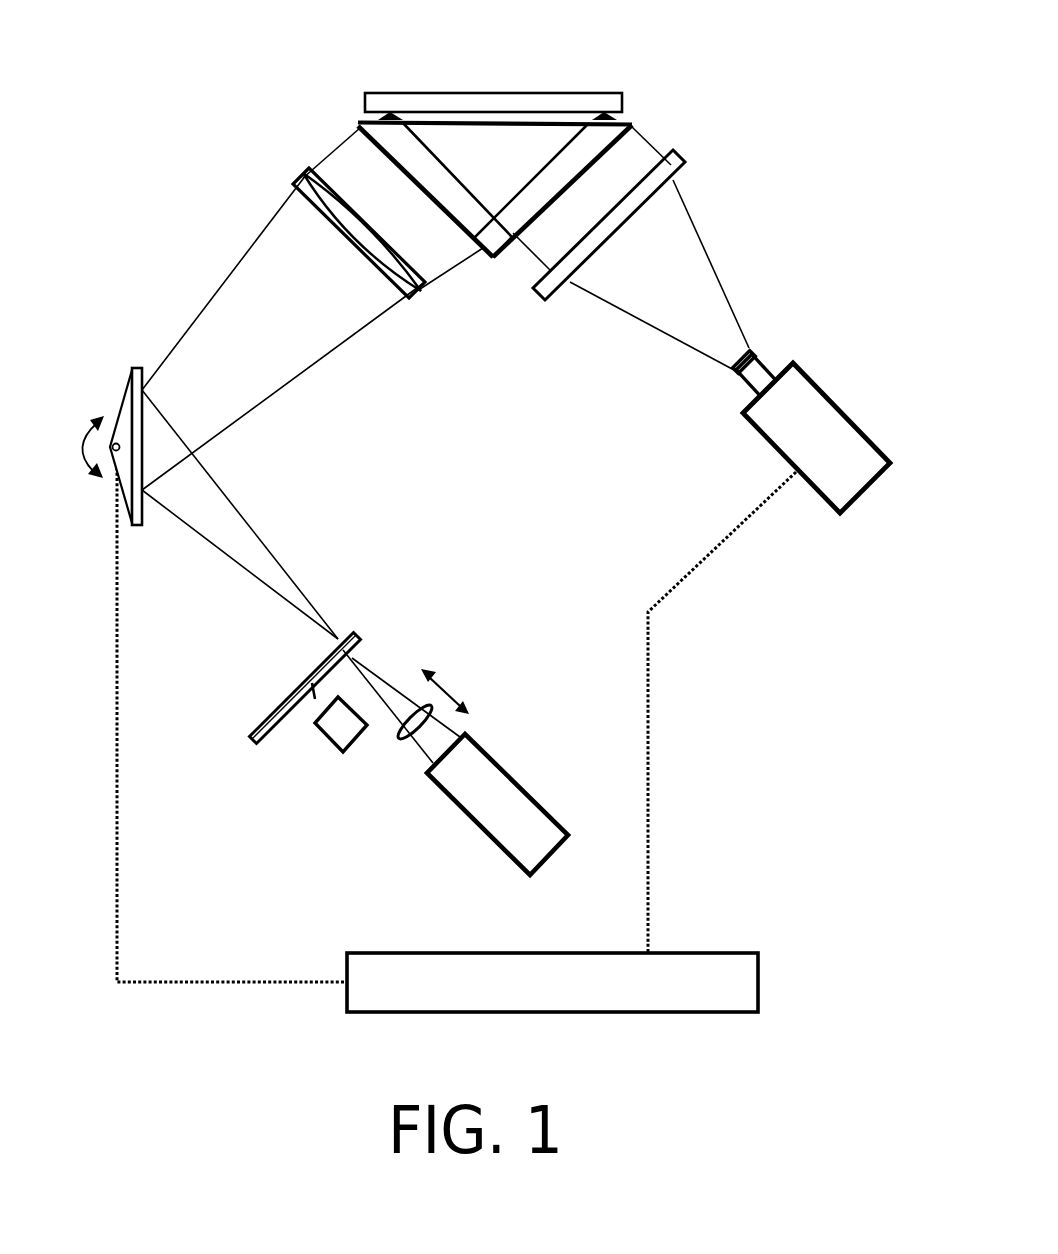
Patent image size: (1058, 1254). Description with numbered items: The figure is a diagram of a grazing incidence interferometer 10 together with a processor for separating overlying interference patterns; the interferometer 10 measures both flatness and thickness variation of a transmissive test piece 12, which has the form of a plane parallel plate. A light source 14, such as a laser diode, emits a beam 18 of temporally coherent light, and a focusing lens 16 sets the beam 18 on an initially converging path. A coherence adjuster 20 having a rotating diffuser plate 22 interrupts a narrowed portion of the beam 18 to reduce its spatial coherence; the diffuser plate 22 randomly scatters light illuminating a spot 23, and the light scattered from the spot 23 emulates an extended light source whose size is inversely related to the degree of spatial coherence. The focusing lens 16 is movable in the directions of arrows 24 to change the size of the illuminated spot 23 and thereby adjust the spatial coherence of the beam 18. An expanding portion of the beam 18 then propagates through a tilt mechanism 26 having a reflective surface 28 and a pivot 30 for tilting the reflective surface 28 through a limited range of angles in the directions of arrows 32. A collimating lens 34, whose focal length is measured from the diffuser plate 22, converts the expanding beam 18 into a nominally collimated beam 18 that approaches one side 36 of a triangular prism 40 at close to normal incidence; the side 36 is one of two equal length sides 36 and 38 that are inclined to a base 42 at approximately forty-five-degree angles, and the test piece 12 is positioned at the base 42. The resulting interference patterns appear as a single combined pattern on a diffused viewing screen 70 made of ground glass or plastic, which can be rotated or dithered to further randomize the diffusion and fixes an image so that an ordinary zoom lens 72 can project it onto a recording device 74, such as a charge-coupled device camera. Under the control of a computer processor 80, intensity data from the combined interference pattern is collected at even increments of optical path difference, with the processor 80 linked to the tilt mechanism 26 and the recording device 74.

The grazing incidence interferometer 10 is at (305, 65).
The transmissive test piece 12 is at (520, 103).
The light source 14 is at (482, 828).
The focusing lens 16 is at (400, 737).
The beam 18 is at (391, 681).
The coherence adjuster 20 is at (314, 744).
The rotating diffuser plate 22 is at (271, 708).
The spot 23 is at (339, 633).
The arrows 24 is at (454, 690).
The tilt mechanism 26 is at (158, 447).
The reflective surface 28 is at (143, 514).
The pivot 30 is at (122, 428).
The arrows 32 is at (80, 468).
The collimating lens 34 is at (298, 183).
The side of triangular prism 36 is at (412, 182).
The side of triangular prism 38 is at (561, 193).
The triangular prism 40 is at (506, 262).
The base of triangular prism 42 is at (458, 127).
The diffused viewing screen 70 is at (689, 164).
The zoom lens 72 is at (743, 392).
The recording device 74 is at (840, 453).
The computer processor 80 is at (548, 993).